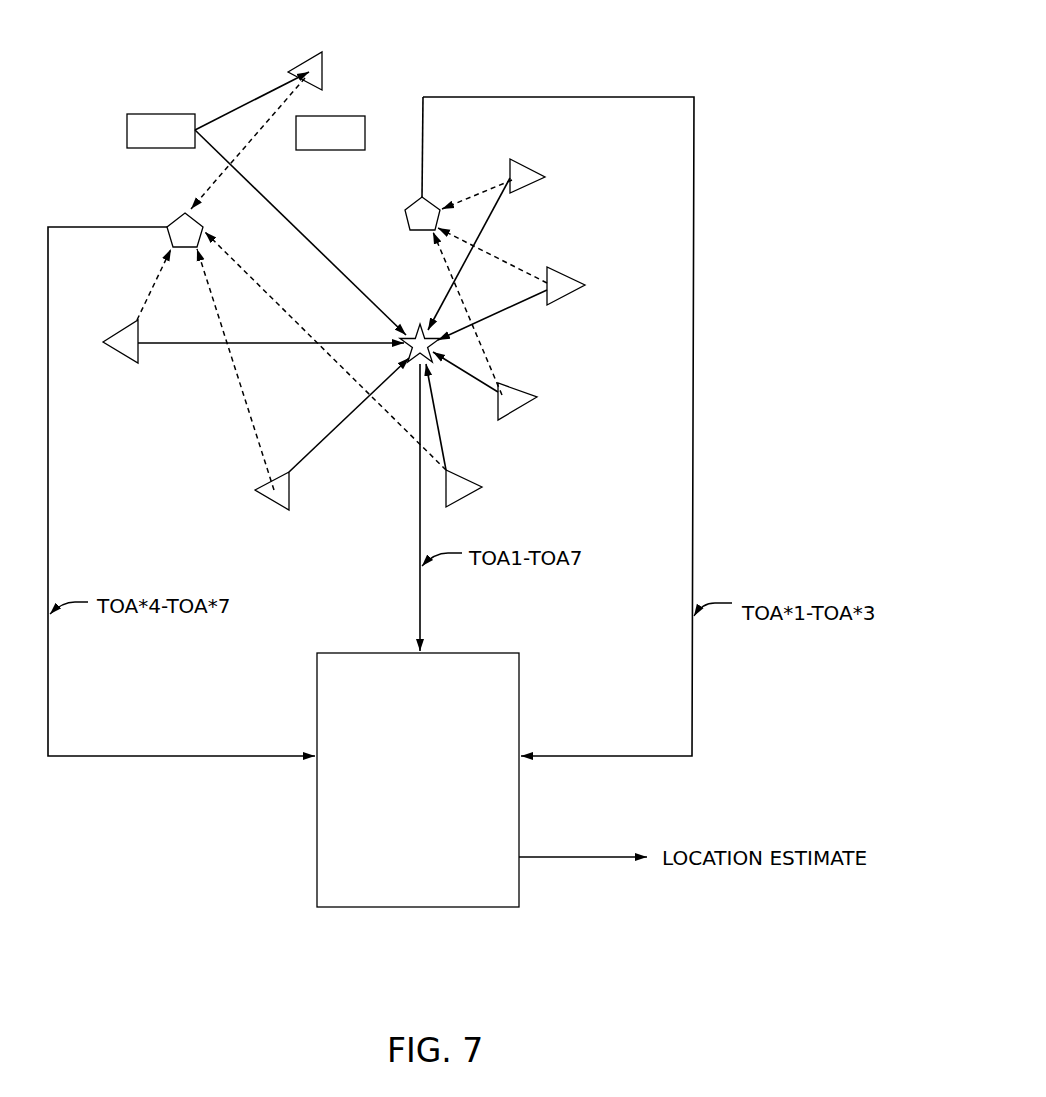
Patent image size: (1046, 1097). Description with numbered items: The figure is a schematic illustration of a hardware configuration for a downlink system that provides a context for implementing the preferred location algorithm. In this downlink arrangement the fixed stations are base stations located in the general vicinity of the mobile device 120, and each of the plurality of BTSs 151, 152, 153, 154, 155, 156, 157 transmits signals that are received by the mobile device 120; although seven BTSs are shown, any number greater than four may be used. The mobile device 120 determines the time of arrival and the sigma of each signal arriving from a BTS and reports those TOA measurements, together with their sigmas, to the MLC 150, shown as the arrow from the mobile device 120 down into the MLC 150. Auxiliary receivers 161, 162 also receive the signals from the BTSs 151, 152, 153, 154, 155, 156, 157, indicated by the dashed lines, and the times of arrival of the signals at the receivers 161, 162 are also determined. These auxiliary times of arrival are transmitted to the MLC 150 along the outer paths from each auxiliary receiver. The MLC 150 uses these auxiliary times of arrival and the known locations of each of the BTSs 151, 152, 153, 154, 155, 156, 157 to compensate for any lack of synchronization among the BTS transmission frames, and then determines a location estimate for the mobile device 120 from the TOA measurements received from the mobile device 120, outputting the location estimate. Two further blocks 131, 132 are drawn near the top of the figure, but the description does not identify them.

The mobile device 120 is at (400, 334).
The reference unit 131 is at (332, 114).
The reference transmitter 132 is at (126, 127).
The MLC 150 is at (316, 719).
The BTS 151 is at (538, 396).
The BTS 152 is at (586, 283).
The BTS 153 is at (546, 176).
The BTS 154 is at (324, 50).
The BTS 155 is at (140, 364).
The BTS 156 is at (291, 513).
The BTS 157 is at (483, 486).
The auxiliary receiver 161 is at (182, 212).
The auxiliary receiver 162 is at (403, 208).